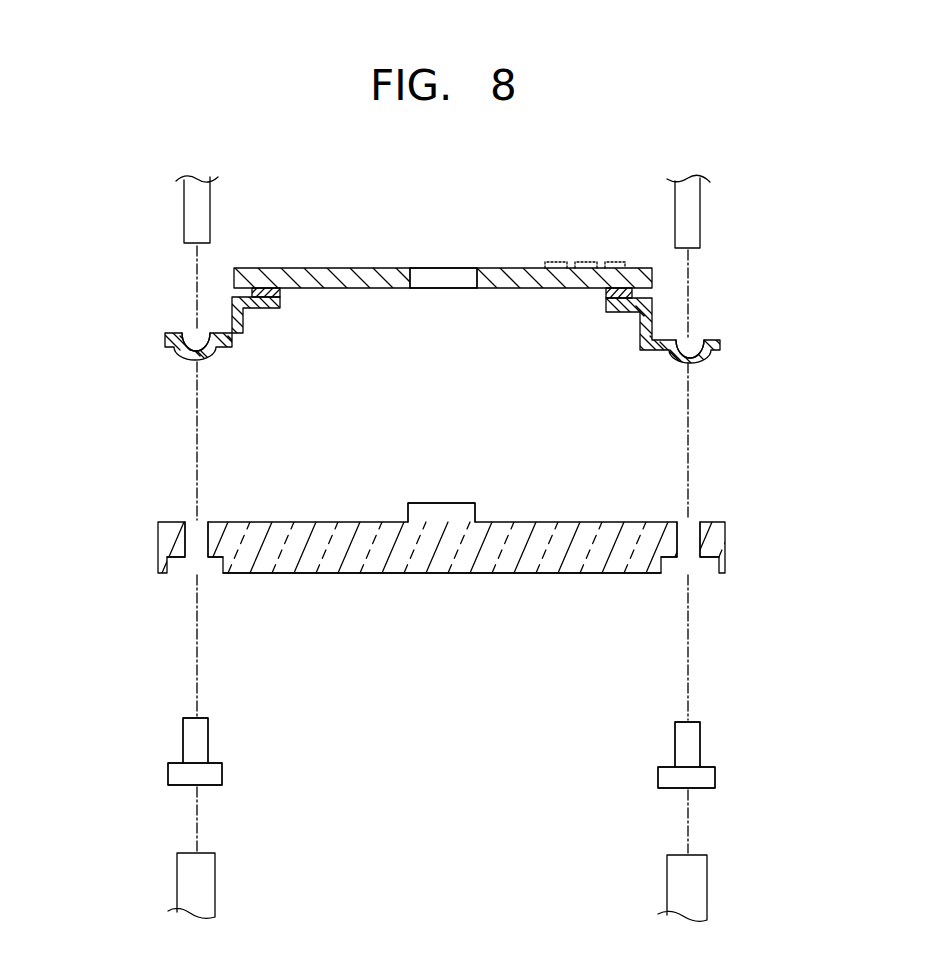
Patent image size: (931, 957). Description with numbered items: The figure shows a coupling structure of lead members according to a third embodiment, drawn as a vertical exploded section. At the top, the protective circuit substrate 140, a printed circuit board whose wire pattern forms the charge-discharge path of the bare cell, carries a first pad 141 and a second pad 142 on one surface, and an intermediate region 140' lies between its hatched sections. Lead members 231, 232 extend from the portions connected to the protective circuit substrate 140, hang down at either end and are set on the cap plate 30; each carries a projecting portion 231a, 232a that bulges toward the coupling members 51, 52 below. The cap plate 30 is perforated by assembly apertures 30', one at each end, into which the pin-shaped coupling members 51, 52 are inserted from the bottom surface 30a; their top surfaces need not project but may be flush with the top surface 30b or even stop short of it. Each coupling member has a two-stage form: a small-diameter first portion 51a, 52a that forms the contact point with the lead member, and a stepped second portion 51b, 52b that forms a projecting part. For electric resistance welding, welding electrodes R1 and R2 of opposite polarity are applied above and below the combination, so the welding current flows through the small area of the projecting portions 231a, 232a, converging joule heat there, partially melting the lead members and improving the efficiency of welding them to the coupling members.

The welding electrode R1 is at (184, 208).
The protective circuit substrate 140 is at (446, 237).
The opening region of mask sheet 140' is at (443, 237).
The first pad 141 is at (622, 292).
The second pad 142 is at (266, 288).
The lead member 231 is at (640, 327).
The projecting portion 231a is at (690, 363).
The lead member 232 is at (243, 323).
The projecting portion 232a is at (197, 362).
The cap plate 30 is at (457, 575).
The assembly aperture 30' is at (443, 584).
The bottom surface 30a is at (520, 573).
The top surface 30b is at (530, 522).
The coupling member 51 is at (805, 745).
The first portion 51a is at (695, 757).
The second portion 51b is at (708, 773).
The coupling member 52 is at (78, 742).
The first portion 52a is at (188, 753).
The second portion 52b is at (177, 770).
The welding electrode R2 is at (183, 888).